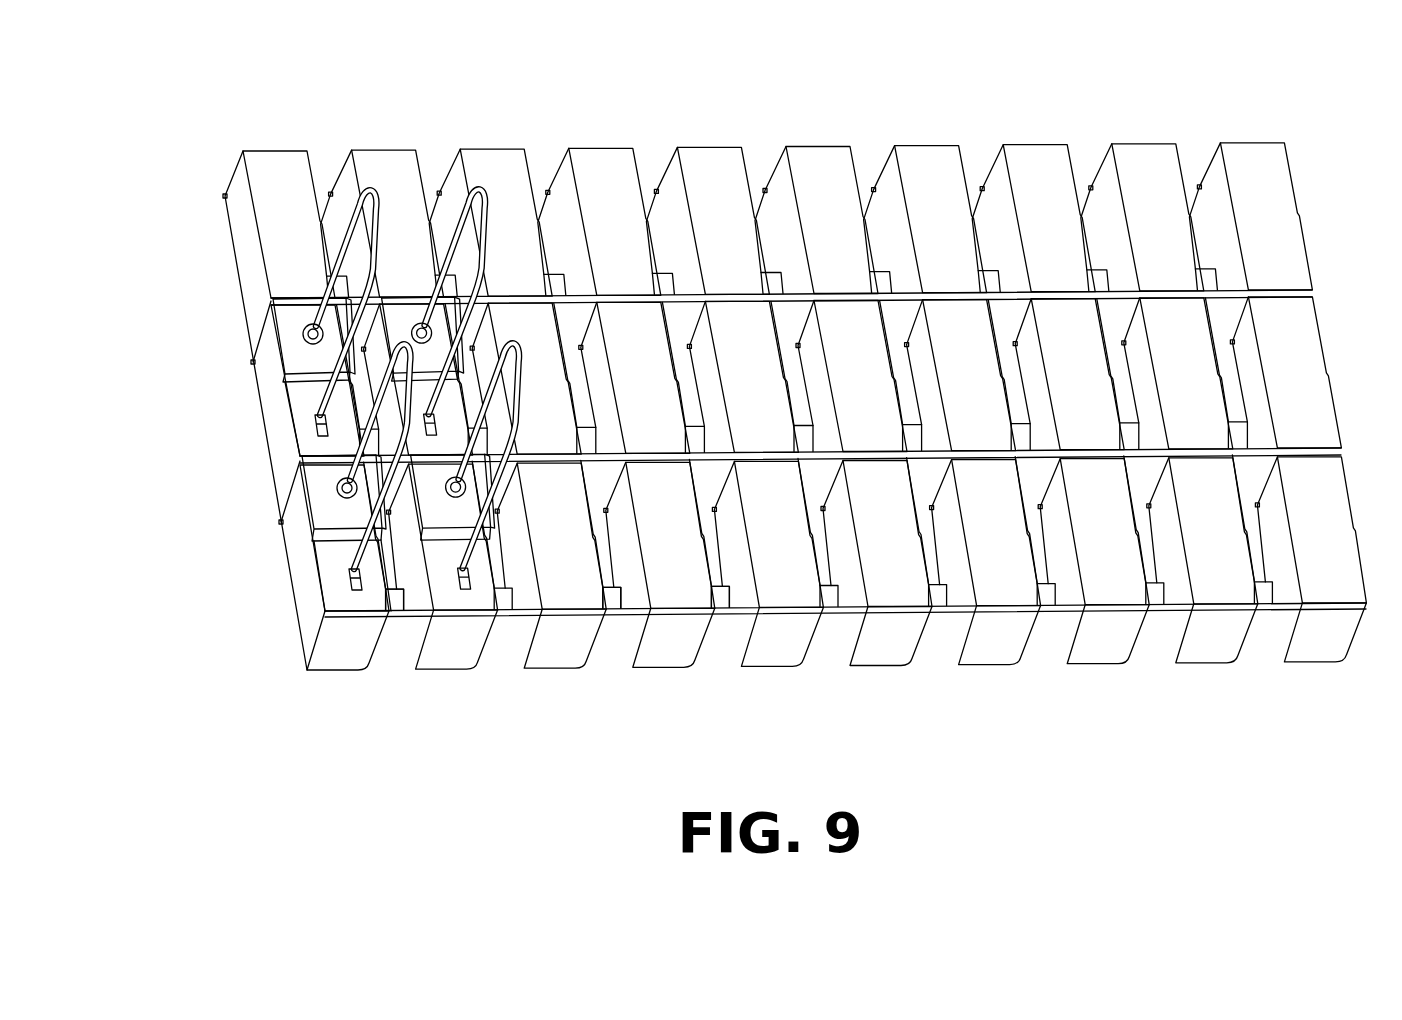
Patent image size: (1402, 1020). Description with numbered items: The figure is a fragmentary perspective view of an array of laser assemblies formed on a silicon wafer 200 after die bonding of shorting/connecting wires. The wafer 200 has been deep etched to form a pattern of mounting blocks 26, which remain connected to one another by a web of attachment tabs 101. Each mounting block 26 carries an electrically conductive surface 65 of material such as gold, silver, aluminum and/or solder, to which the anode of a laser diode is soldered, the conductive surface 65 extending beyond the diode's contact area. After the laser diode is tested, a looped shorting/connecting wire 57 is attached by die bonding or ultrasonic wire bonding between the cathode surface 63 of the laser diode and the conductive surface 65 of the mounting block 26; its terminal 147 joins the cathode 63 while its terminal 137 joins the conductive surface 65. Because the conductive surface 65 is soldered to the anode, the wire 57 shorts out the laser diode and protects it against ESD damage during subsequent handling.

The mounting block 26 is at (276, 163).
The shorting/connecting wire 57 is at (378, 201).
The cathode surface 63 is at (292, 337).
The conductive surface 65 is at (306, 405).
The attachment tab 101 is at (397, 613).
The terminal 137 is at (350, 588).
The terminal 147 is at (338, 484).
The silicon wafer 200 is at (932, 141).